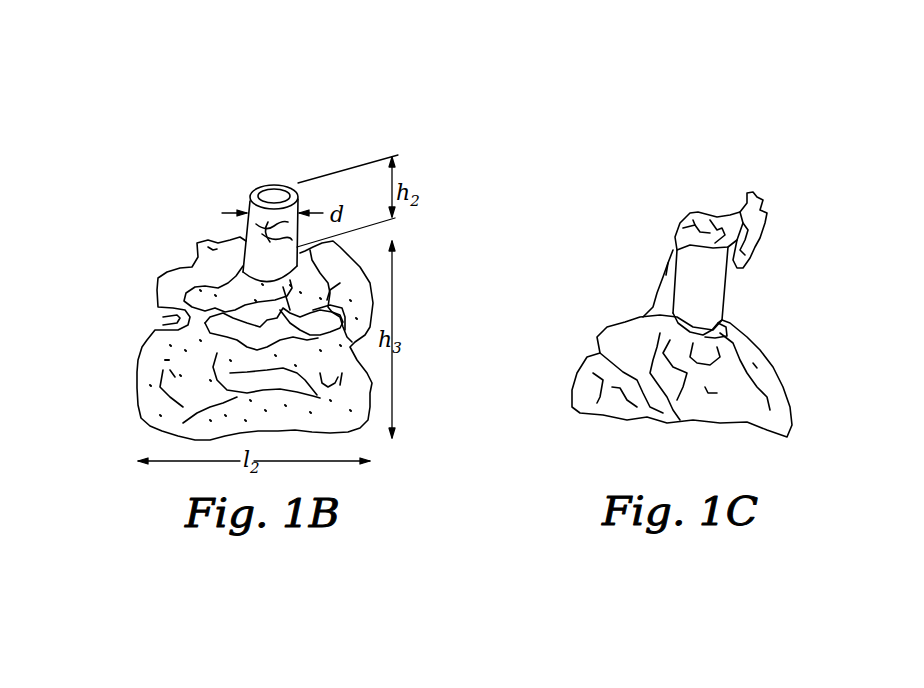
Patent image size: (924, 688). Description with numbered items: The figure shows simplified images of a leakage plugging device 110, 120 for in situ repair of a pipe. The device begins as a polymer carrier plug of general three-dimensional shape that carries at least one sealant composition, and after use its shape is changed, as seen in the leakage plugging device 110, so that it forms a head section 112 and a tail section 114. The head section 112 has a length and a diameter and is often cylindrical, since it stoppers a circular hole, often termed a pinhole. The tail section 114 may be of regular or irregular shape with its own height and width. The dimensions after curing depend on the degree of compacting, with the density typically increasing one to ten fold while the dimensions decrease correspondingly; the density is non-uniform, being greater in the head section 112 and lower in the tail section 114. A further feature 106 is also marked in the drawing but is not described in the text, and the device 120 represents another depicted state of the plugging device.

In FIG. 1B, the smoking article 106 is at (9, 249).
In FIG. 1B, the leakage plugging device 110 is at (460, 121).
In FIG. 1B, the head section 112 is at (247, 188).
In FIG. 1B, the tail section 114 is at (110, 355).
In FIG. 1C, the leakage plugging device 120 is at (815, 123).